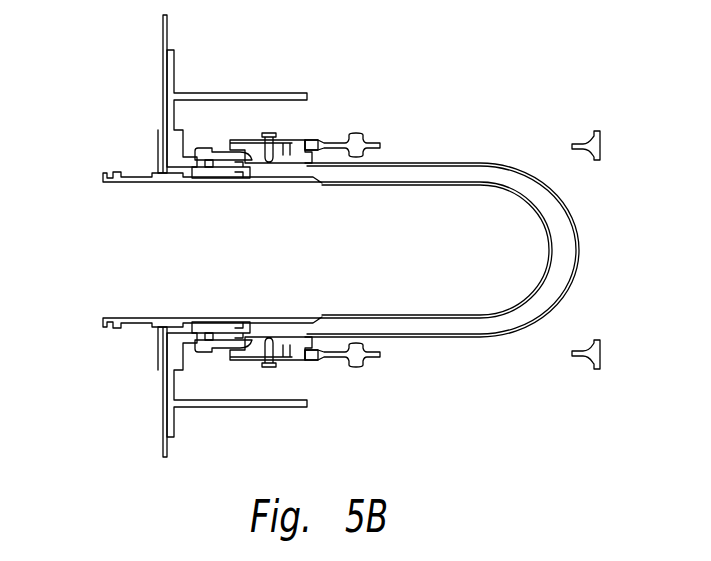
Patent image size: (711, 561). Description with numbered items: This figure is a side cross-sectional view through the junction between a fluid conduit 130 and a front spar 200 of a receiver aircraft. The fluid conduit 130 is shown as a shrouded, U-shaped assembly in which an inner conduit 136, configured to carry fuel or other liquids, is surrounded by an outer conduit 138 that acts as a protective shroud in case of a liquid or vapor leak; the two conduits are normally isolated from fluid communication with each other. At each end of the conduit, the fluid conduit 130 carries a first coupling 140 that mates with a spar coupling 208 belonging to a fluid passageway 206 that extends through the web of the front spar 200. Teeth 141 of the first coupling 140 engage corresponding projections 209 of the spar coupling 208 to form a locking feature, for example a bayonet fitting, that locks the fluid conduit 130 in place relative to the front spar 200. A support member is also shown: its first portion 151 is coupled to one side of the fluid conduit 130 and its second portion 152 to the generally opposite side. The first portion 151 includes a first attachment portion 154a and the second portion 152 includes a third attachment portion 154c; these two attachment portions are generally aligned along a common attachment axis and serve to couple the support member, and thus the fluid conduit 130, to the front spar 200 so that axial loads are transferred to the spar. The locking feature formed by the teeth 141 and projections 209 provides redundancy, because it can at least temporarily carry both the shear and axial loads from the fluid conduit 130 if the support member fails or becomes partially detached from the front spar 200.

The fluid conduit 130 is at (484, 223).
The inner conduit 136 is at (551, 247).
The outer conduit 138 is at (578, 237).
The first coupling 140 is at (243, 162).
The teeth 141 is at (207, 149).
The first portion 151 is at (370, 131).
The second portion 152 is at (358, 366).
The first attachment portion 154a is at (304, 124).
The third attachment portion 154c is at (305, 376).
The front spar 200 is at (152, 52).
The fluid passageway 206 is at (145, 181).
The spar coupling 208 is at (210, 167).
The projections 209 is at (213, 161).